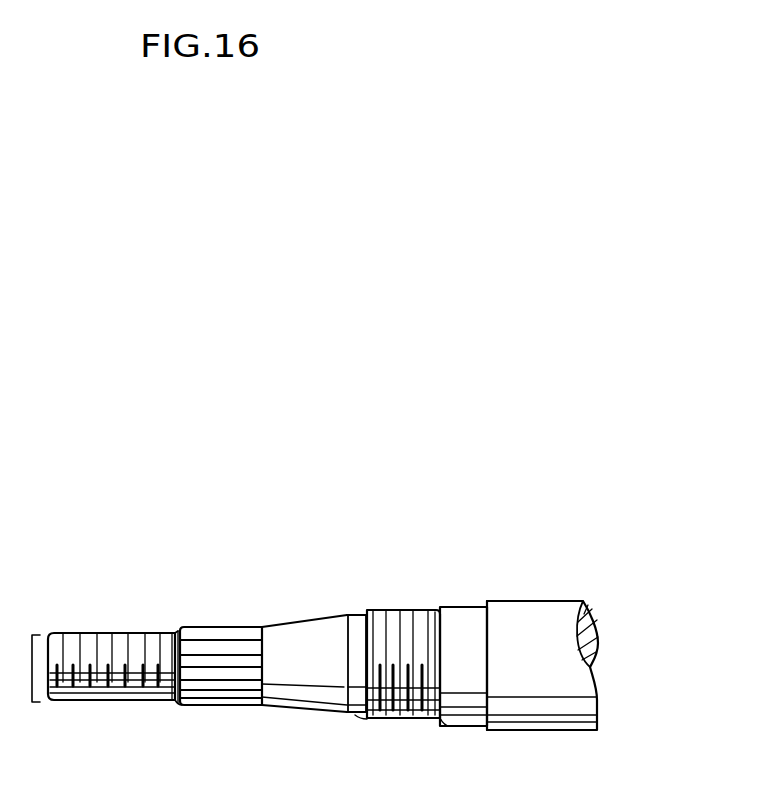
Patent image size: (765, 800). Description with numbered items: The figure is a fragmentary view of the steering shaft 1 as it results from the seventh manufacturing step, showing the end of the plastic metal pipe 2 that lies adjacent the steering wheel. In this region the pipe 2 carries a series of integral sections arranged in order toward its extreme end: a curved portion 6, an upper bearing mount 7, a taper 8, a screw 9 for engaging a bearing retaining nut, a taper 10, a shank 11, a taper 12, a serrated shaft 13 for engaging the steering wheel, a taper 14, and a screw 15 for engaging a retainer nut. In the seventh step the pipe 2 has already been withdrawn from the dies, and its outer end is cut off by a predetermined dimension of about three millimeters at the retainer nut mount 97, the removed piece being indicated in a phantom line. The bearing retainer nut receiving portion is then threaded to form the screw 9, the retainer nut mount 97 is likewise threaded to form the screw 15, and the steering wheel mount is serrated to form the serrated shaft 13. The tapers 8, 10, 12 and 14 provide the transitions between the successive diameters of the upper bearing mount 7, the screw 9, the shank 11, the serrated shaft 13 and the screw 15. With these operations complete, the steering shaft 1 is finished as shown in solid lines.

The steering shaft 1 is at (605, 600).
The plastic metal pipe 2 is at (545, 613).
The curved portion 6 is at (477, 603).
The upper bearing mount 7 is at (457, 614).
The taper 8 is at (436, 722).
The screw 9 is at (396, 608).
The taper 10 is at (369, 722).
The shank 11 is at (358, 612).
The taper 12 is at (306, 694).
The serrated shaft 13 is at (230, 627).
The taper 14 is at (178, 706).
The screw 15 is at (118, 633).
The retainer nut mount 97 is at (36, 634).